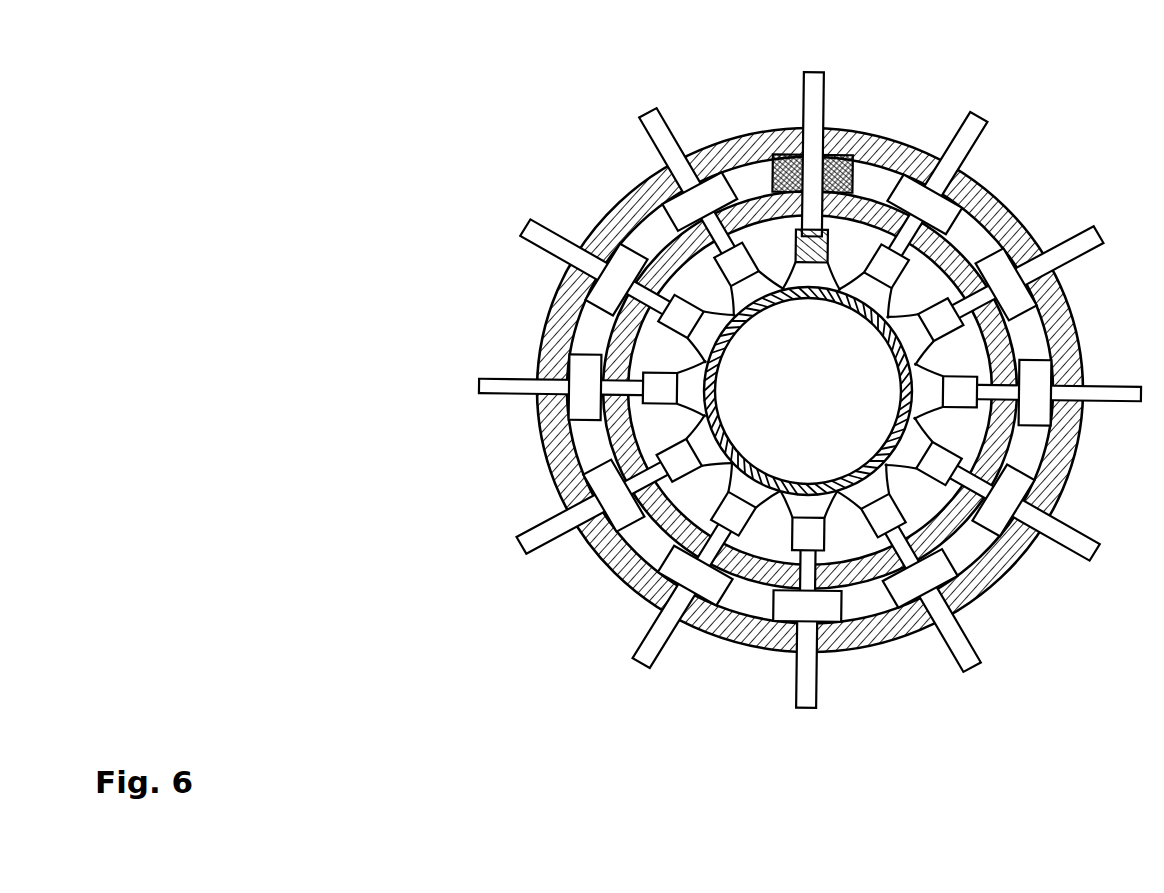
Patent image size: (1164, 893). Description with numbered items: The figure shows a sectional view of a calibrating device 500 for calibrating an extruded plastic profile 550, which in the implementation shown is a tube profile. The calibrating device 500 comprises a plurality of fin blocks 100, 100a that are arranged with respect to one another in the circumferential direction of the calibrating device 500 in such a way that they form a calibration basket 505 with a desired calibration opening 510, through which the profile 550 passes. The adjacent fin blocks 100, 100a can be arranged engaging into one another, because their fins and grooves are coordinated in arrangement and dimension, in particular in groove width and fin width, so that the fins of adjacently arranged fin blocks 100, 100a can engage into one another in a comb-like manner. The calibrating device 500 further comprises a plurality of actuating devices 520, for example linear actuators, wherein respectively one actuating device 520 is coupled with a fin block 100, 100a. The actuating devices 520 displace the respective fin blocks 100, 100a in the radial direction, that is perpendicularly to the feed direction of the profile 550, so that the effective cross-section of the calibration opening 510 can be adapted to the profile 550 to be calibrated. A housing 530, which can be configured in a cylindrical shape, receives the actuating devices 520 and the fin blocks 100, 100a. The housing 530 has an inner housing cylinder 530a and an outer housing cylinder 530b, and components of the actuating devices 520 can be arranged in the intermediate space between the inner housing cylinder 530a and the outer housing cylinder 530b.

The calibrating device 500 is at (836, 807).
The calibration basket 505 is at (713, 470).
The calibration opening 510 is at (834, 385).
The actuating device 520 is at (777, 162).
The housing 530 is at (588, 207).
The inner housing cylinder 530a is at (610, 321).
The outer housing cylinder 530b is at (540, 441).
The extruded plastic profile 550 is at (712, 417).
The fin block 100 is at (823, 275).
The fin block 100a is at (814, 152).